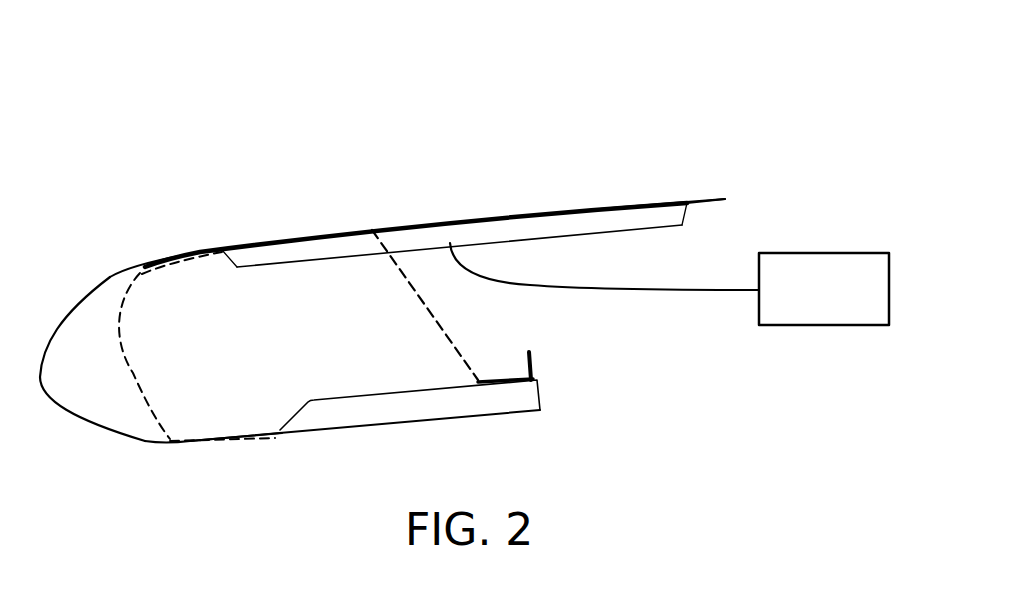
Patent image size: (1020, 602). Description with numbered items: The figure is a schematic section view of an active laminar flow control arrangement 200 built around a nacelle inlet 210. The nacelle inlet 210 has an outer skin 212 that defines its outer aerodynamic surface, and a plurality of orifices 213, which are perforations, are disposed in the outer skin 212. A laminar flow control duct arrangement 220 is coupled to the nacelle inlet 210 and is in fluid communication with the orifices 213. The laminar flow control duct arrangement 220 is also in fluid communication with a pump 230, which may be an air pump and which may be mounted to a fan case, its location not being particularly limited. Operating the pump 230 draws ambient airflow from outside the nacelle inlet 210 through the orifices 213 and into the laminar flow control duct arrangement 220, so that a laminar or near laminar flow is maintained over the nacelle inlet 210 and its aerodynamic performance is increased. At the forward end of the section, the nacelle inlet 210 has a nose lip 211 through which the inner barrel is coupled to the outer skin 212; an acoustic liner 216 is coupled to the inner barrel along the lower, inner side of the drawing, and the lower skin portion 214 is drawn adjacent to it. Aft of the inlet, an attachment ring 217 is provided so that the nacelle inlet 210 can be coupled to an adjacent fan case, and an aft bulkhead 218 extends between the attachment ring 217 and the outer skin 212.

The active laminar flow control arrangement 200 is at (269, 128).
The nacelle inlet 210 is at (113, 277).
The nose lip 211 is at (50, 333).
The outer skin 212 is at (442, 218).
The orifices 213 is at (535, 212).
The lower skin portion 214 is at (290, 436).
The acoustic liner 216 is at (393, 408).
The attachment ring 217 is at (537, 370).
The aft bulkhead 218 is at (434, 327).
The laminar flow control duct arrangement 220 is at (297, 250).
The pump 230 is at (808, 252).